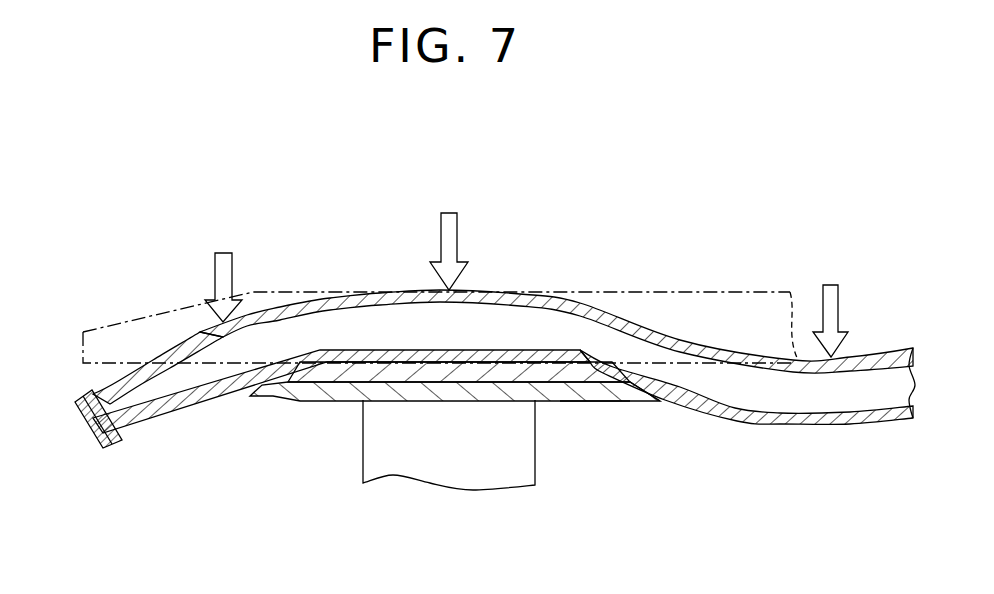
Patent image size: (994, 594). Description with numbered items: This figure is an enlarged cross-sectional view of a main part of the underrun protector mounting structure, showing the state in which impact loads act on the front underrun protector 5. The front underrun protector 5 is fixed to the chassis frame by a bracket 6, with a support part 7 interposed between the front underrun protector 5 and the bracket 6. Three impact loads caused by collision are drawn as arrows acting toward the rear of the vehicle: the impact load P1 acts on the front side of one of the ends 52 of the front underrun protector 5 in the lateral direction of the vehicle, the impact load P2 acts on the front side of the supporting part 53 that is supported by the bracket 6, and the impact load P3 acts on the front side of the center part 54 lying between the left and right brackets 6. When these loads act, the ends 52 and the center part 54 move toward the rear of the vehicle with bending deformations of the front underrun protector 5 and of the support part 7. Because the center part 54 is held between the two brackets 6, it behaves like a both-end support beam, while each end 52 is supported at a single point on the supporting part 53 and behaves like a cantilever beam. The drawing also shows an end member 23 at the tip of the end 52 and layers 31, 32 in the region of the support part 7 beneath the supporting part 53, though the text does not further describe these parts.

The front underrun protector 5 is at (150, 421).
The ends 52 is at (170, 381).
The supporting part 53 is at (445, 366).
The center part 54 is at (847, 388).
The end cap 23 is at (93, 437).
The support part 7 is at (347, 404).
The first layer 31 is at (638, 398).
The second layer 32 is at (593, 398).
The bracket 6 is at (503, 478).
The impact load P1 is at (223, 268).
The impact load P2 is at (449, 234).
The impact load P3 is at (830, 303).